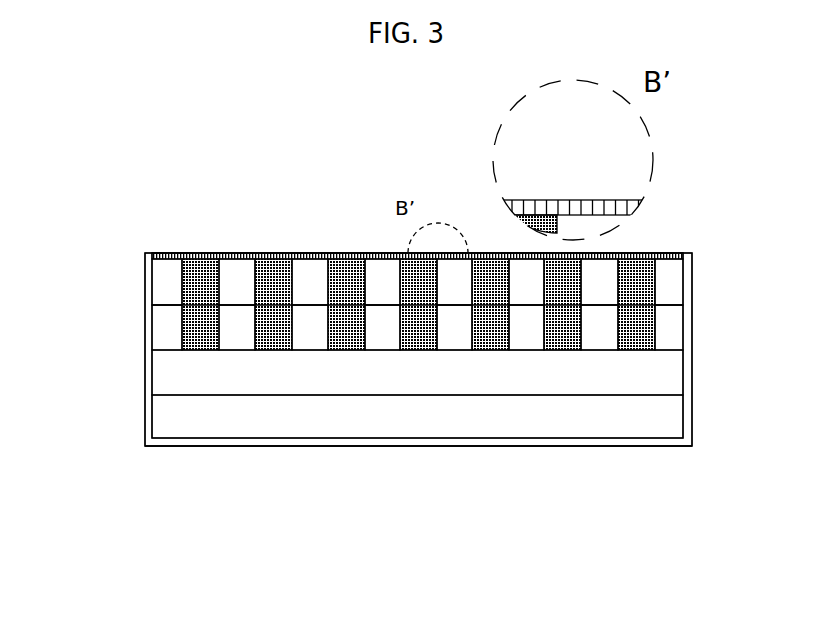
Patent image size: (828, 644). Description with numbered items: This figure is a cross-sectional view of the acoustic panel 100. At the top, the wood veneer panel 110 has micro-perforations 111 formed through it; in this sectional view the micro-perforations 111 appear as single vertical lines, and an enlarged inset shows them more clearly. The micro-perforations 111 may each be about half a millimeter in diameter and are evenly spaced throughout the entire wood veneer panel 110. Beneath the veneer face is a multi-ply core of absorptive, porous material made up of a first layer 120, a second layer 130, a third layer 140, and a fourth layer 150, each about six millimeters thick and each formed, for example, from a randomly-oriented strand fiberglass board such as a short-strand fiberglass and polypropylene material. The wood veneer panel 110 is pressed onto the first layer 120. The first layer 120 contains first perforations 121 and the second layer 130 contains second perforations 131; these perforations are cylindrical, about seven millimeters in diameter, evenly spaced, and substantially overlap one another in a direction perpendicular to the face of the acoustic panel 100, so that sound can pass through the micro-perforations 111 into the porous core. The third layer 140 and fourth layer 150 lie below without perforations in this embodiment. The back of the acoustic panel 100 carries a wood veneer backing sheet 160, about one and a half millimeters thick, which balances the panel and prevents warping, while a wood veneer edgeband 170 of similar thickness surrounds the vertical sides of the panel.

The acoustic panel 100 is at (143, 47).
The wood veneer panel 110 is at (365, 251).
The micro-perforations 111 is at (304, 251).
The first layer 120 is at (198, 284).
The first perforations 121 is at (234, 288).
The second layer 130 is at (197, 320).
The second perforations 131 is at (178, 333).
The third layer 140 is at (179, 378).
The fourth layer 150 is at (206, 410).
The wood veneer backing sheet 160 is at (279, 451).
The wood veneer edgeband 170 is at (143, 405).